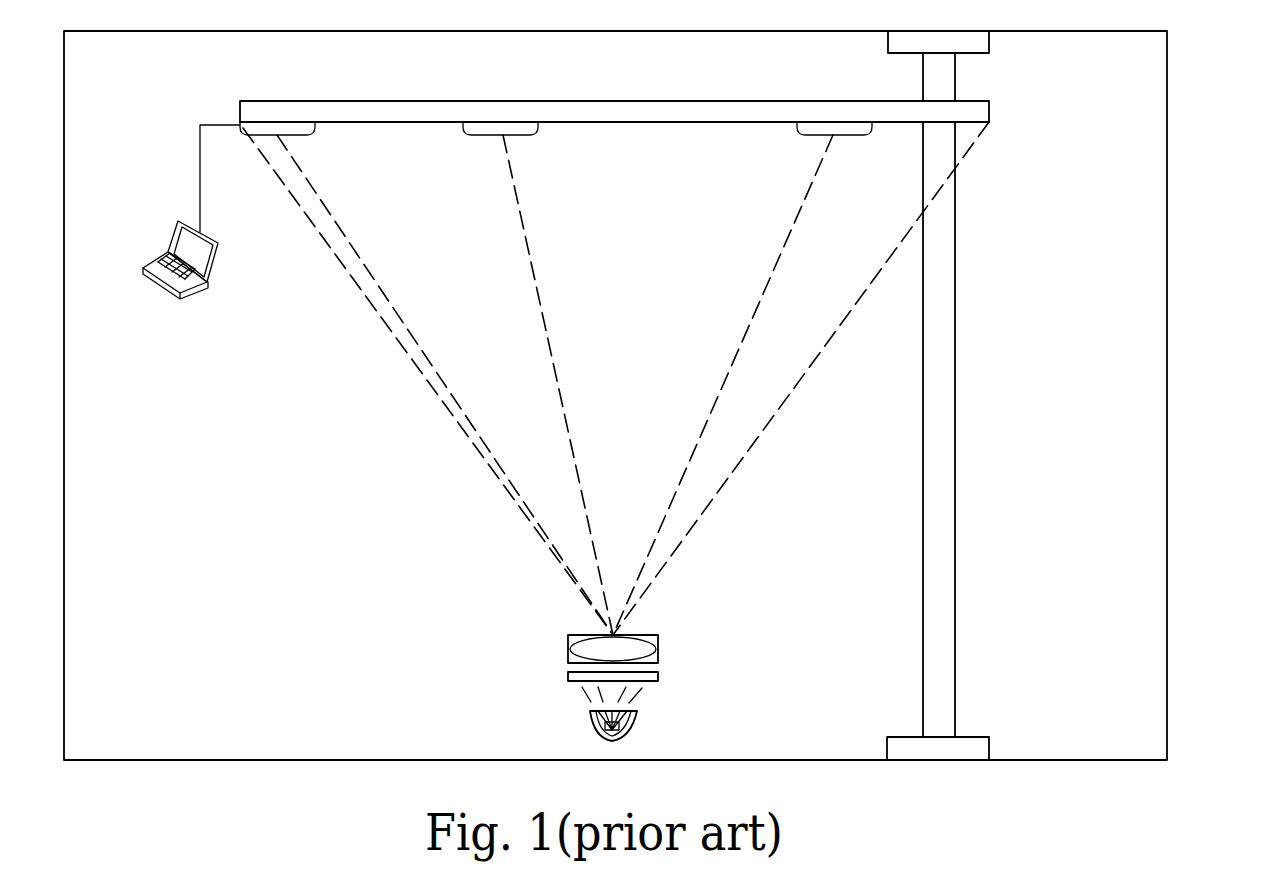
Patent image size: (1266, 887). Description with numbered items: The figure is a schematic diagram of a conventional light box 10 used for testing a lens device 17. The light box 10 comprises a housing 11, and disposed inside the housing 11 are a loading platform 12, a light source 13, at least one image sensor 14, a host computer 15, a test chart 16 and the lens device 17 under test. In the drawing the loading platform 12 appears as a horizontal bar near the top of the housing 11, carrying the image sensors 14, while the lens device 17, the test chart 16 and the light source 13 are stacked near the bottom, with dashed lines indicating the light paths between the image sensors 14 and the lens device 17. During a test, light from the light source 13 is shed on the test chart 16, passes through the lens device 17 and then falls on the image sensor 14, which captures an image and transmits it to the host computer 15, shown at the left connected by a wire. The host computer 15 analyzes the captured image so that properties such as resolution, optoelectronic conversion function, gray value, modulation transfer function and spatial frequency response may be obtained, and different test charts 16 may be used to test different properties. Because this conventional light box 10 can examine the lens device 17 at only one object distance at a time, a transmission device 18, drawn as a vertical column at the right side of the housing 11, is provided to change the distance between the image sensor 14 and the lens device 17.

The light box 10 is at (1265, 62).
The housing 11 is at (1167, 393).
The loading platform 12 is at (625, 112).
The light source 13 is at (637, 711).
The image sensor 14 is at (477, 134).
The host computer 15 is at (148, 264).
The test chart 16 is at (567, 675).
The lens device 17 is at (658, 650).
The transmission device 18 is at (955, 575).